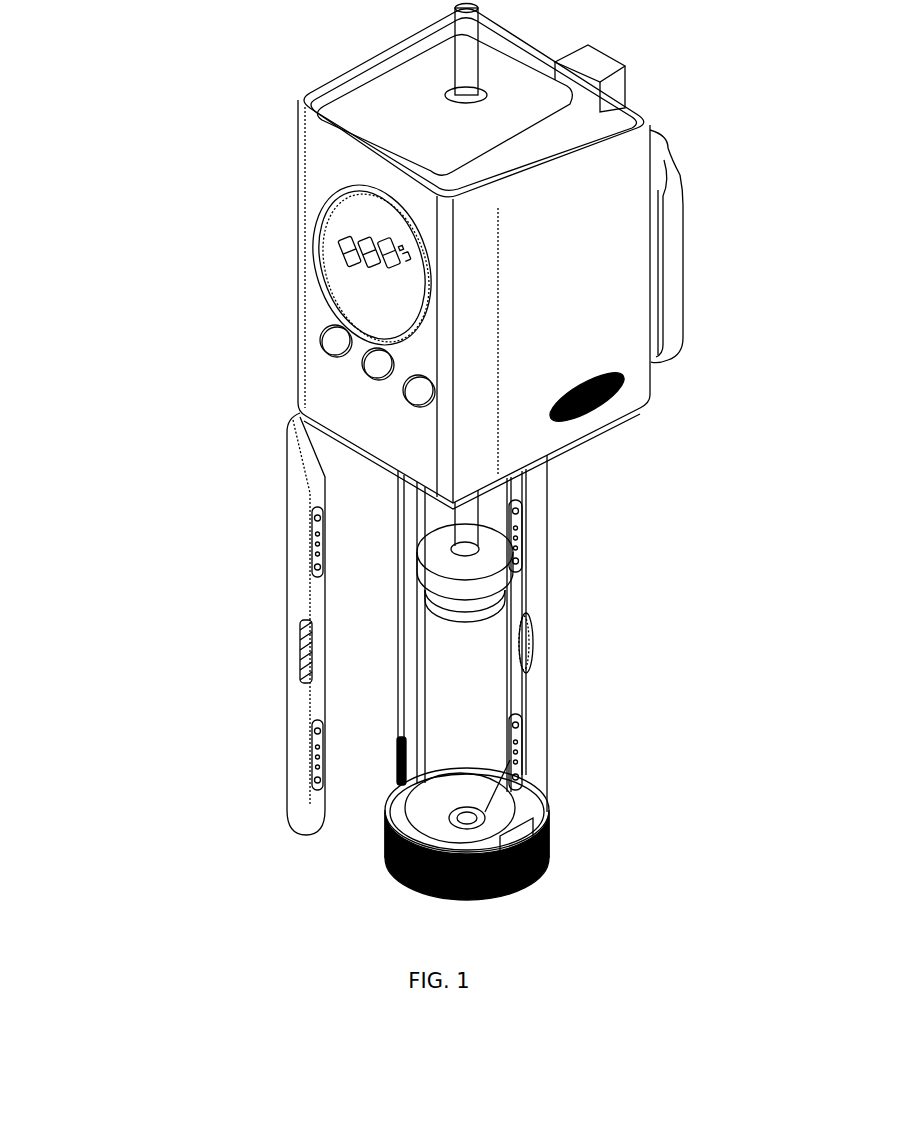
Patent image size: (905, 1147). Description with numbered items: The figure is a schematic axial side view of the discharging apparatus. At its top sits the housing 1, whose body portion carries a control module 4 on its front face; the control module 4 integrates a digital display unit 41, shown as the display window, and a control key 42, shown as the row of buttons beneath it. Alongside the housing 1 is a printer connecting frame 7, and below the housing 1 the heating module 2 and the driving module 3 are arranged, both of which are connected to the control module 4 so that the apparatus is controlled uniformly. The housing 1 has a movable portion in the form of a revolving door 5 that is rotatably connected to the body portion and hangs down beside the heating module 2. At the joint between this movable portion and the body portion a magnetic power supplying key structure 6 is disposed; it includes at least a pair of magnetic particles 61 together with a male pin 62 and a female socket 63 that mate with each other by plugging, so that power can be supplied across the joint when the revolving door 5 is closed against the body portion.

The housing 1 is at (540, 787).
The heating module 2 is at (312, 442).
The driving module 3 is at (472, 567).
The control module 4 is at (241, 281).
The digital display unit 41 is at (383, 226).
The control key 42 is at (418, 393).
The revolving door 5 is at (297, 597).
The magnetic power supplying key structure 6 is at (282, 704).
The magnetic particle 61 is at (397, 777).
The male pin 62 is at (510, 760).
The female socket 63 is at (313, 753).
The printer connecting frame 7 is at (673, 229).